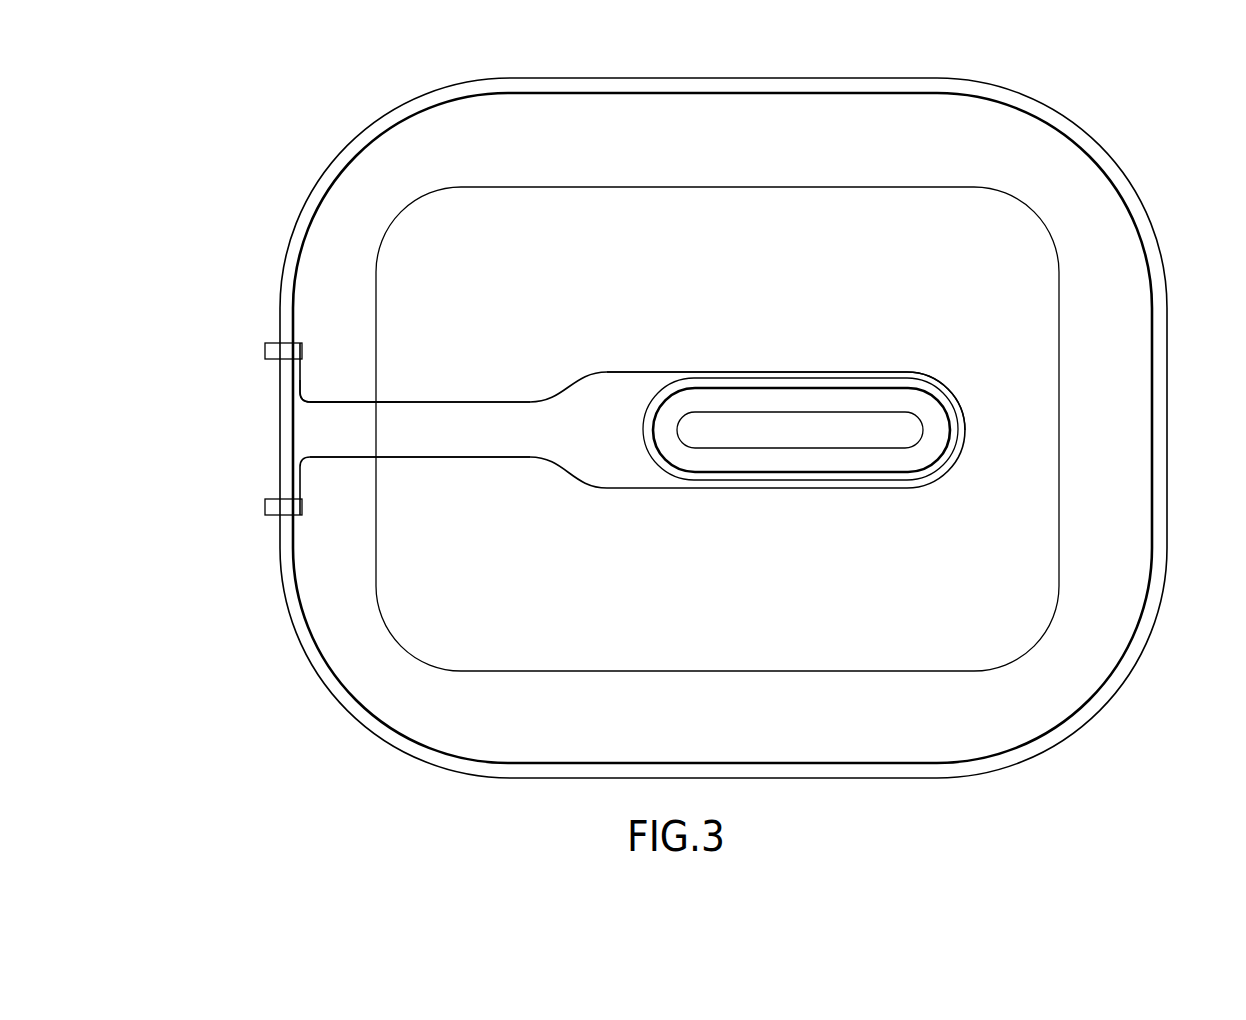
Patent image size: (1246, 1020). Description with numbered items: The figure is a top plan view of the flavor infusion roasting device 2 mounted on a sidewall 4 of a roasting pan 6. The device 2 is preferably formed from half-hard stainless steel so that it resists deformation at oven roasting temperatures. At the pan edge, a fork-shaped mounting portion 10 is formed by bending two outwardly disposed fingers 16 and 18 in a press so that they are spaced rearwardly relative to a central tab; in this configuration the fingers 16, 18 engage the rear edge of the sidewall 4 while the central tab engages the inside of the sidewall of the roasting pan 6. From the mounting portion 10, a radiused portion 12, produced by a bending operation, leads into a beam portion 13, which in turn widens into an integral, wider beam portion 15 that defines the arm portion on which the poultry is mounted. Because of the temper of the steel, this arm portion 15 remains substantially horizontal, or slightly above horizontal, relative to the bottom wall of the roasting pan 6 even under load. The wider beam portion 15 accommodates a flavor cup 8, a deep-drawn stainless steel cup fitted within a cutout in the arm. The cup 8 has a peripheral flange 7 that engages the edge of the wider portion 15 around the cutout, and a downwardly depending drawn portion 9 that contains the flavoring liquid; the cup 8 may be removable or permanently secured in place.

The flavor infusion roasting device 2 is at (582, 368).
The sidewall 4 is at (318, 583).
The roasting pan 6 is at (1145, 146).
The peripheral flange 7 is at (876, 482).
The flavor cup 8 is at (733, 478).
The downwardly depending drawn portion 9 is at (878, 425).
The fork-shaped mounting portion 10 is at (302, 396).
The radiused portion 12 is at (350, 400).
The beam portion 13 is at (509, 459).
The wider beam portion 15 is at (669, 378).
The finger 16 is at (265, 506).
The finger 18 is at (265, 350).